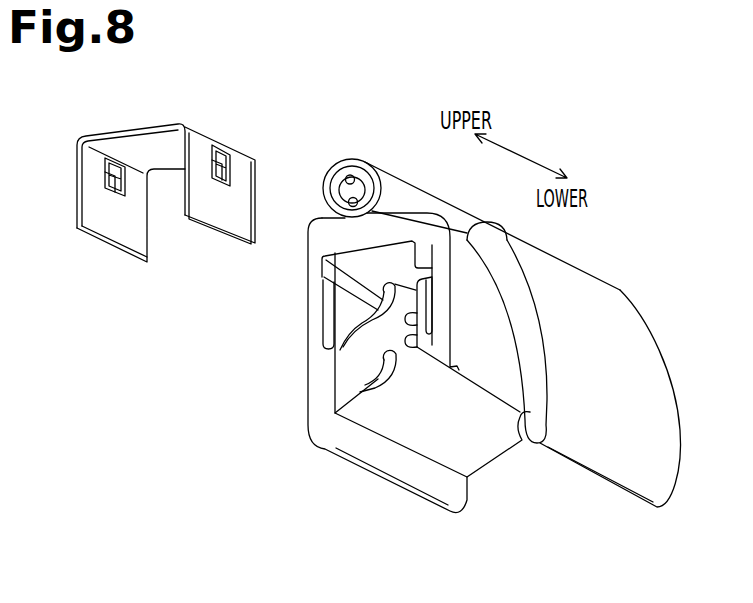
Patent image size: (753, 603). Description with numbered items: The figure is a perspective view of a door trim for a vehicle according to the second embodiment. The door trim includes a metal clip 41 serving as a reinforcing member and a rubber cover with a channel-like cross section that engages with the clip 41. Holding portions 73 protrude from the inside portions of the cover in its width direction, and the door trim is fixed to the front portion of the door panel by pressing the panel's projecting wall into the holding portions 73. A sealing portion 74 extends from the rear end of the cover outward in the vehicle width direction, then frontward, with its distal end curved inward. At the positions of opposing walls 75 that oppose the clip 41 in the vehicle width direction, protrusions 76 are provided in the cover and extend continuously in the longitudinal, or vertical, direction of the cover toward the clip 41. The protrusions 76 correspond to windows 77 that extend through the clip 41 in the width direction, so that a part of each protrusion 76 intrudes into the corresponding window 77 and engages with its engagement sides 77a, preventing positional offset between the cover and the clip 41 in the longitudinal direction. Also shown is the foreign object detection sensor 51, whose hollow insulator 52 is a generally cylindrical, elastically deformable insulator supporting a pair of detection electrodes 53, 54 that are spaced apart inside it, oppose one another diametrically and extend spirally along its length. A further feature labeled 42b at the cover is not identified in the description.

The clip 41 is at (126, 124).
The window 77 is at (89, 137).
The engagement side 77a is at (214, 145).
The pivot boss 42b is at (358, 159).
The detection electrode 53 is at (339, 167).
The hollow insulator 52 is at (337, 181).
The detection electrode 54 is at (333, 217).
The foreign object detection sensor 51 is at (382, 188).
The opposing wall 75 is at (309, 320).
The protrusion 76 is at (417, 246).
The holding portion 73 is at (350, 356).
The sealing portion 74 is at (600, 284).